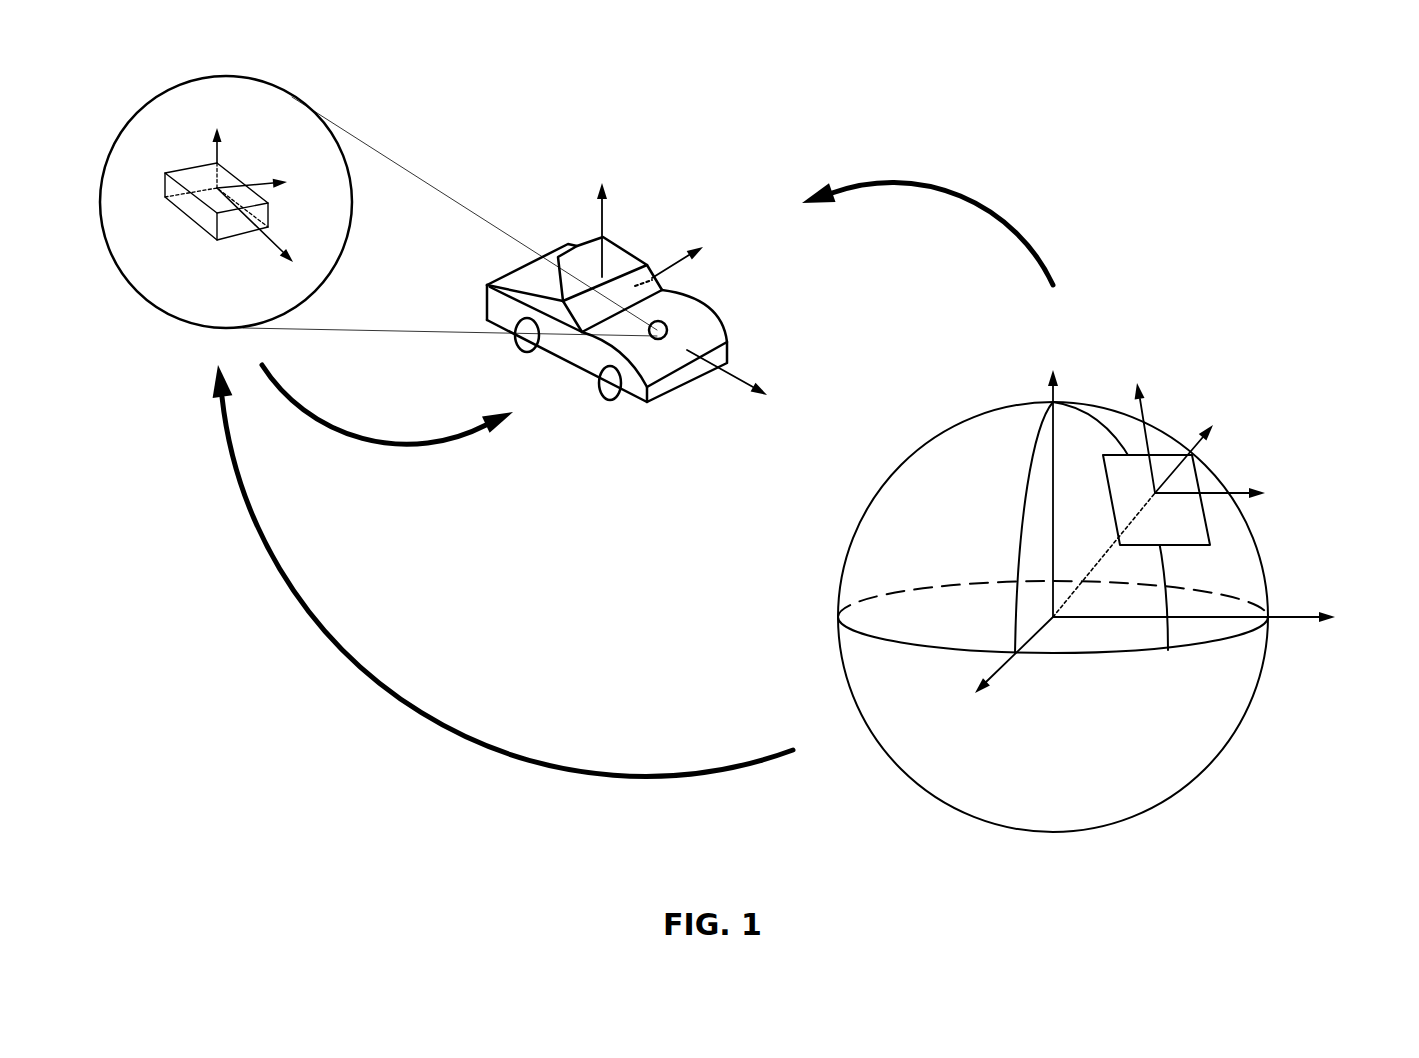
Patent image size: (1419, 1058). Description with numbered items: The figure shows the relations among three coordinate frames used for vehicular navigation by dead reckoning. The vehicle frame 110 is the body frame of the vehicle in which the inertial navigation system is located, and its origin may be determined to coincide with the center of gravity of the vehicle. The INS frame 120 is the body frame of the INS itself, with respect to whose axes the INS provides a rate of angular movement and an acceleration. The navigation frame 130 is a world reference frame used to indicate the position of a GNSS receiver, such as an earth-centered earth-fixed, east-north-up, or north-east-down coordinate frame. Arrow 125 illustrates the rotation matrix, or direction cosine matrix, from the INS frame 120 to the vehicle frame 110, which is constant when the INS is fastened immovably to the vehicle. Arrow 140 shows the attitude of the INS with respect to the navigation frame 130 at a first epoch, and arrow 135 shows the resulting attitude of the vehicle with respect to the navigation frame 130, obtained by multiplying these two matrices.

The vehicle frame 110 is at (612, 440).
The INS frame 120 is at (269, 128).
The navigation frame 130 is at (1061, 871).
The arrow 125 is at (372, 445).
The arrow 135 is at (918, 180).
The arrow 140 is at (377, 680).